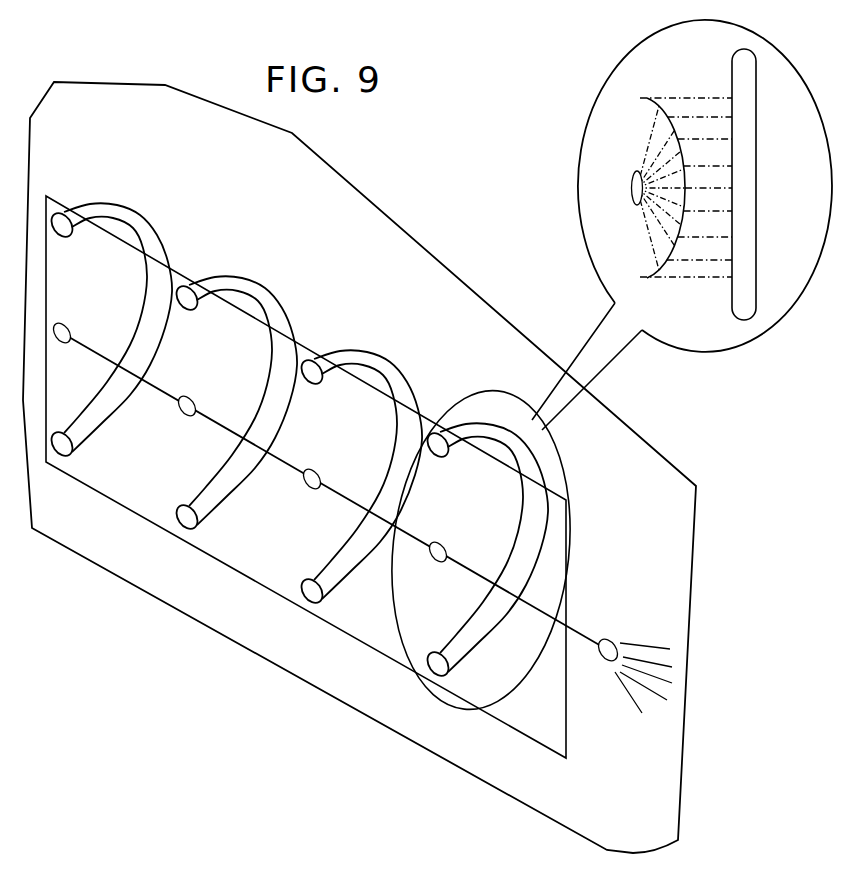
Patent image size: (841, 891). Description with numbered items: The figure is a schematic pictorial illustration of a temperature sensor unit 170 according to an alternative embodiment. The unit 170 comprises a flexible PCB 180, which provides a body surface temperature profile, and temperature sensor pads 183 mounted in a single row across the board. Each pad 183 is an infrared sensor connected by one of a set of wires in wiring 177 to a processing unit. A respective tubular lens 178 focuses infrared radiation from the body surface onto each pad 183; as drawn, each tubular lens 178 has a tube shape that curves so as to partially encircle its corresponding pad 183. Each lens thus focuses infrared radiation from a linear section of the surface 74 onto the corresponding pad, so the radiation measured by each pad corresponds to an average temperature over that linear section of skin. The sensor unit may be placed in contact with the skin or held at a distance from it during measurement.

The surface 74 is at (170, 102).
The temperature sensor unit 170 is at (486, 338).
The wiring 177 is at (592, 645).
The tubular lens 178 is at (68, 212).
The flexible PCB 180 is at (568, 715).
The temperature sensor pad 183 is at (61, 321).